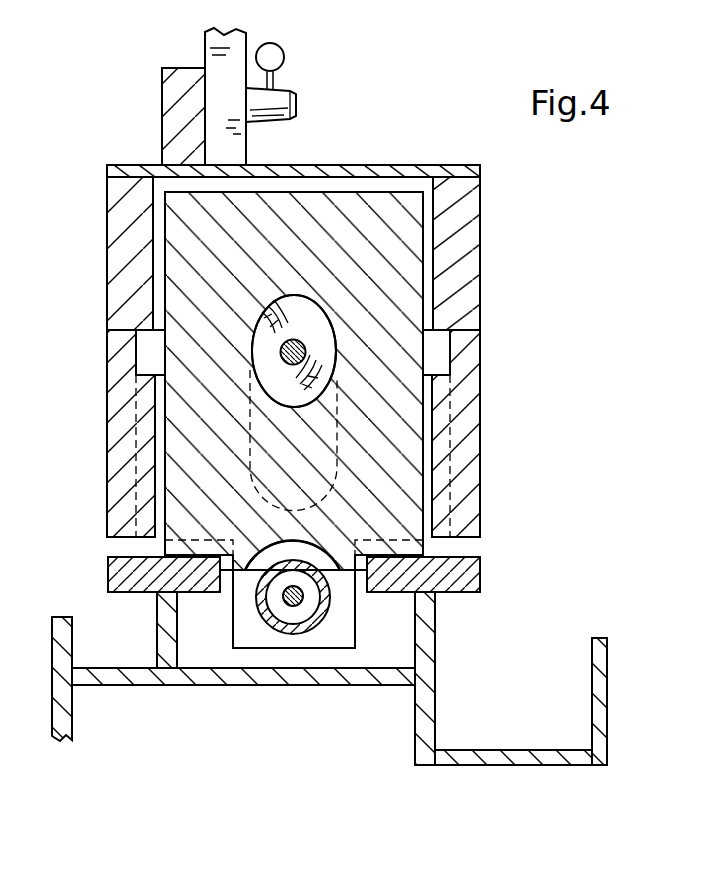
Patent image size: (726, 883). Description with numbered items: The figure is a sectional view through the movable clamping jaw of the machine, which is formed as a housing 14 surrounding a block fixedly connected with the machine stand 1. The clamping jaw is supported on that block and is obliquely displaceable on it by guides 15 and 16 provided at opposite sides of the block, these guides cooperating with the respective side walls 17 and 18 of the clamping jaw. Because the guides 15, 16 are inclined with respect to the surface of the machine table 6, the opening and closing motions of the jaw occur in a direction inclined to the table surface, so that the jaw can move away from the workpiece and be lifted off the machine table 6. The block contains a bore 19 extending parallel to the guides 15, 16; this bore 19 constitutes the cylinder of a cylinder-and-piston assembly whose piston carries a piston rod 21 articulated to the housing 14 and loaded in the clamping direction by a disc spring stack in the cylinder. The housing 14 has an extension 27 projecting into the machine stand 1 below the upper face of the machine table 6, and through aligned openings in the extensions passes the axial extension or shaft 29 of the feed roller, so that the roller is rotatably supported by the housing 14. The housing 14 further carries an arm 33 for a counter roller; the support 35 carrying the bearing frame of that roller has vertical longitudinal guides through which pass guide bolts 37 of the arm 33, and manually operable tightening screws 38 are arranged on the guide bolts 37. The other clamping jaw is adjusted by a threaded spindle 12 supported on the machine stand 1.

The machine stand 1 is at (137, 683).
The machine table 6 is at (478, 575).
The threaded spindle 12 is at (270, 603).
The housing 14 is at (410, 167).
The guide 15 is at (480, 333).
The guide 16 is at (108, 330).
The side wall 17 is at (481, 424).
The side wall 18 is at (114, 428).
The bore 19 is at (250, 467).
The piston rod 21 is at (306, 348).
The extension 27 is at (356, 617).
The axial extension (shaft) 29 is at (320, 617).
The arm 33 is at (164, 113).
The support 35 is at (208, 54).
The guide bolt 37 is at (299, 97).
The tightening screw 38 is at (283, 121).